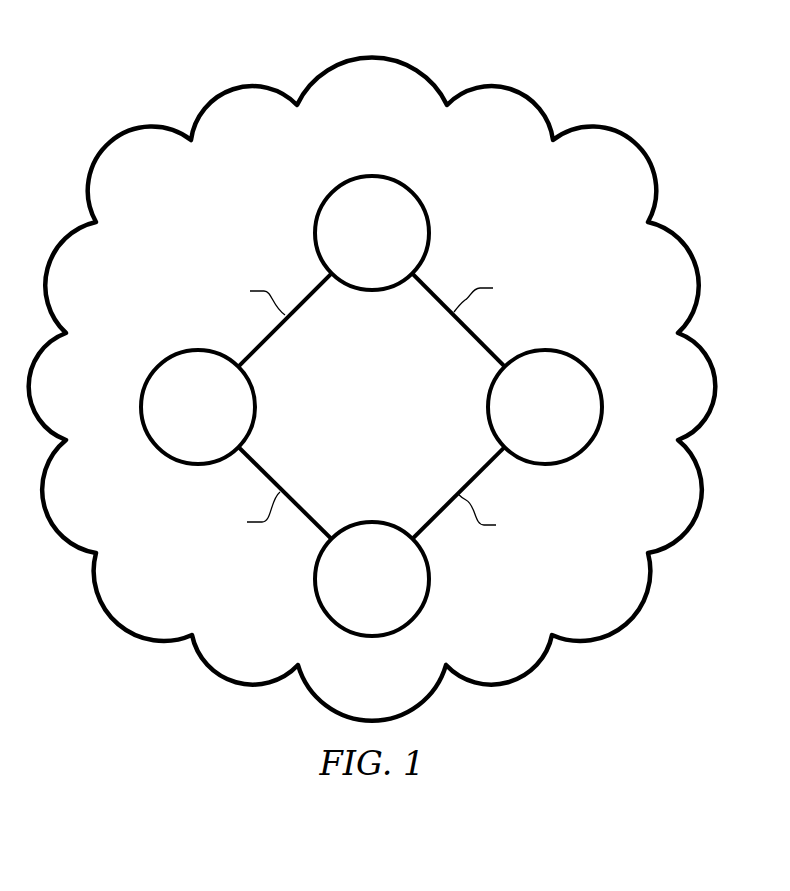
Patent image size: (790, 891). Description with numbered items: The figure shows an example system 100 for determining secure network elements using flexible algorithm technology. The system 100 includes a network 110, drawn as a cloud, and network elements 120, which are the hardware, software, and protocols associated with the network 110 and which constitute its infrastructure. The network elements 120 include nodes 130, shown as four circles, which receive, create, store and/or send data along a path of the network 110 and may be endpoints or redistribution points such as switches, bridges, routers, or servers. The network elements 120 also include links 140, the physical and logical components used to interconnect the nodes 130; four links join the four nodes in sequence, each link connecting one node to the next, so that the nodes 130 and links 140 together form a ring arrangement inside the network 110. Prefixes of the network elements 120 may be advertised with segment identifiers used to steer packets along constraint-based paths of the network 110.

The system 100 is at (210, 41).
The network 110 is at (490, 127).
The network elements 120 is at (428, 287).
The nodes 130 is at (337, 186).
The links 140 is at (310, 287).